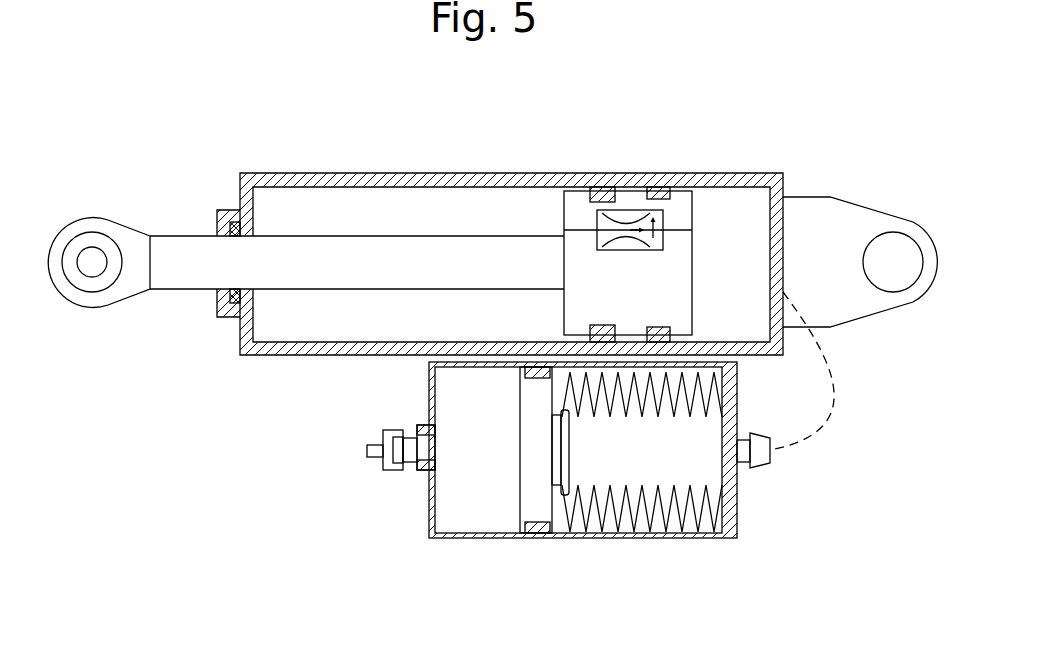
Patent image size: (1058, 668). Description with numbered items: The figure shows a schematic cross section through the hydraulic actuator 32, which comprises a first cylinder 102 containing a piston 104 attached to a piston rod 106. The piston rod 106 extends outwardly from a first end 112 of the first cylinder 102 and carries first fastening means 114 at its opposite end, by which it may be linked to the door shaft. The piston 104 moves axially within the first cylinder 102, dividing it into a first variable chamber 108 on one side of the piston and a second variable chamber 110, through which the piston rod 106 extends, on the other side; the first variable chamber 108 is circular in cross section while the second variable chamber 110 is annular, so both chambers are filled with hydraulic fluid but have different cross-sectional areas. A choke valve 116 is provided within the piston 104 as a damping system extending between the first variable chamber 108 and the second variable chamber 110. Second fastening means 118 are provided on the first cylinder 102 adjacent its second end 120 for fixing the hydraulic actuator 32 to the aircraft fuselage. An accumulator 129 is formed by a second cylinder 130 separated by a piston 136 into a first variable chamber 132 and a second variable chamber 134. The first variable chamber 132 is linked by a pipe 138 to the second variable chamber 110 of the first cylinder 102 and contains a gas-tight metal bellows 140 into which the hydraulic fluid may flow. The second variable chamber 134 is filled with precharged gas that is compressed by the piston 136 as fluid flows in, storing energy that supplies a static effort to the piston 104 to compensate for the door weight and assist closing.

The hydraulic actuator 32 is at (868, 361).
The first cylinder 102 is at (417, 177).
The piston 104 is at (680, 220).
The piston rod 106 is at (178, 236).
The first variable chamber 108 is at (741, 220).
The second variable chamber 110 is at (342, 210).
The first end 112 is at (232, 208).
The first fastening means 114 is at (78, 285).
The choke valve 116 is at (628, 222).
The second fastening means 118 is at (843, 220).
The second end 120 is at (783, 338).
The accumulator 129 is at (762, 572).
The second cylinder 130 is at (443, 537).
The first variable chamber 132 is at (693, 463).
The second variable chamber 134 is at (452, 512).
The piston 136 is at (547, 497).
The pipe 138 is at (838, 432).
The gas-tight metal bellows 140 is at (632, 515).